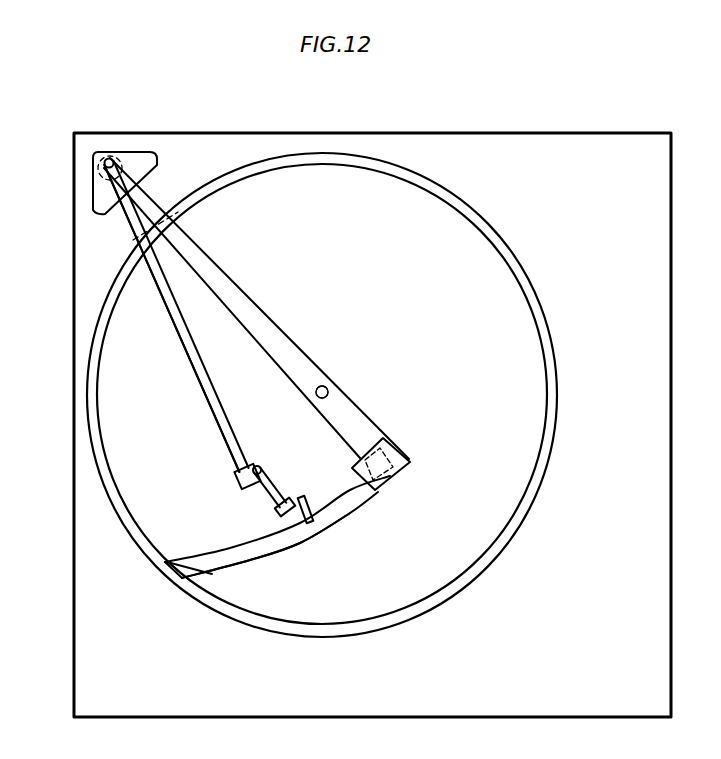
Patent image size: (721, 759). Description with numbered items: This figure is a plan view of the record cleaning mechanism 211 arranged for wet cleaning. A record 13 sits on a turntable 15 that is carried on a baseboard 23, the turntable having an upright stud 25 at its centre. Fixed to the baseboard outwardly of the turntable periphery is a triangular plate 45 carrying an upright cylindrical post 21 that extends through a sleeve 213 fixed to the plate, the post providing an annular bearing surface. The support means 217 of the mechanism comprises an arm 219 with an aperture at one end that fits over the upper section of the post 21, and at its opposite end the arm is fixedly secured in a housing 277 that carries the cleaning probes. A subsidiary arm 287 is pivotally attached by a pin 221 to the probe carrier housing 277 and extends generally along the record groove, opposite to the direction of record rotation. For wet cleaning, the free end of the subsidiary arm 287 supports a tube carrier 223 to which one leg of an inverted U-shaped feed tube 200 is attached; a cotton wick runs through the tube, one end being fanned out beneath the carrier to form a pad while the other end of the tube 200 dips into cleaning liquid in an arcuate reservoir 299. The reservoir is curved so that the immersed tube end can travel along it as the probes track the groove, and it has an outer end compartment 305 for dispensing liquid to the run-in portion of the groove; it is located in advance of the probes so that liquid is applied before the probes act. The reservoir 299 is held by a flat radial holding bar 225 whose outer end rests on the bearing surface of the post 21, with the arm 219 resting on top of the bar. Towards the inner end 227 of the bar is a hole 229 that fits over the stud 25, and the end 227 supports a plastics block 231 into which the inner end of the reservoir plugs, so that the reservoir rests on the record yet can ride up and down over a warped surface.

The mechanism 211 is at (100, 256).
The turntable 15 is at (526, 268).
The record 13 is at (470, 352).
The baseboard 23 is at (604, 570).
The upright stud 25 is at (329, 392).
The hole 229 is at (324, 386).
The triangular plate 45 is at (140, 150).
The upright cylindrical post 21 is at (109, 152).
The sleeve 213 is at (98, 183).
The holding bar 225 is at (240, 300).
The end of the bar 227 is at (405, 458).
The plastics block 231 is at (388, 470).
The support means 217 is at (181, 358).
The arm 219 is at (198, 427).
The housing 277 is at (240, 480).
The pin 221 is at (258, 463).
The subsidiary arm 287 is at (283, 492).
The tube carrier 223 is at (302, 498).
The reservoir 299 is at (335, 512).
The feed tube 200 is at (318, 530).
The outer end compartment 305 is at (175, 571).